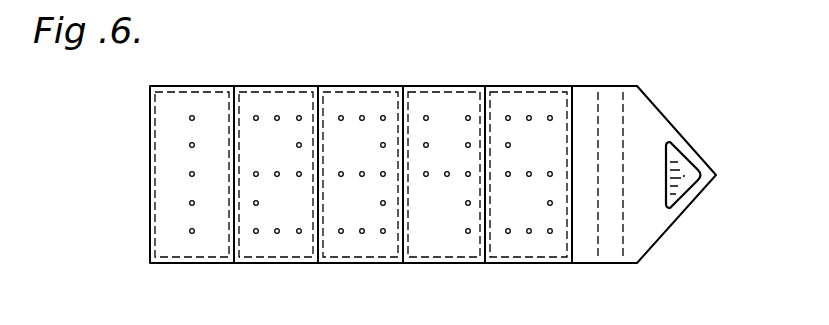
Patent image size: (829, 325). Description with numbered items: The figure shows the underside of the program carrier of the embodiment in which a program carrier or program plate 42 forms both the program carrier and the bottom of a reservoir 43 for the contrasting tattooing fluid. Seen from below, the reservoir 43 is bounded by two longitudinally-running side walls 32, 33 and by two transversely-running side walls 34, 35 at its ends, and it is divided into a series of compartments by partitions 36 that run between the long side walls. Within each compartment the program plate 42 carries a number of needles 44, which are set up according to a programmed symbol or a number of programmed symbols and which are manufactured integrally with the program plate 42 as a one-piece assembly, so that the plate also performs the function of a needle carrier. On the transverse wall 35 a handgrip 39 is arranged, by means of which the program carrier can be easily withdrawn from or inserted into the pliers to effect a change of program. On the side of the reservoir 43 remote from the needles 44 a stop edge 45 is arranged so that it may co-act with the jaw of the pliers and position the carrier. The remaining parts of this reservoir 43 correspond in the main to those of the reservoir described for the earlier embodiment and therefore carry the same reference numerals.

The longitudinally-running side wall 32 is at (347, 90).
The longitudinally-running side wall 33 is at (354, 262).
The transversely-running side wall 34 is at (154, 189).
The transversely-running side wall 35 is at (567, 100).
The partition 36 is at (488, 90).
The handgrip 39 is at (681, 150).
The program carrier or program plate 42 is at (265, 100).
The reservoir 43 is at (148, 139).
The needles 44 is at (192, 115).
The stop edge 45 is at (607, 100).